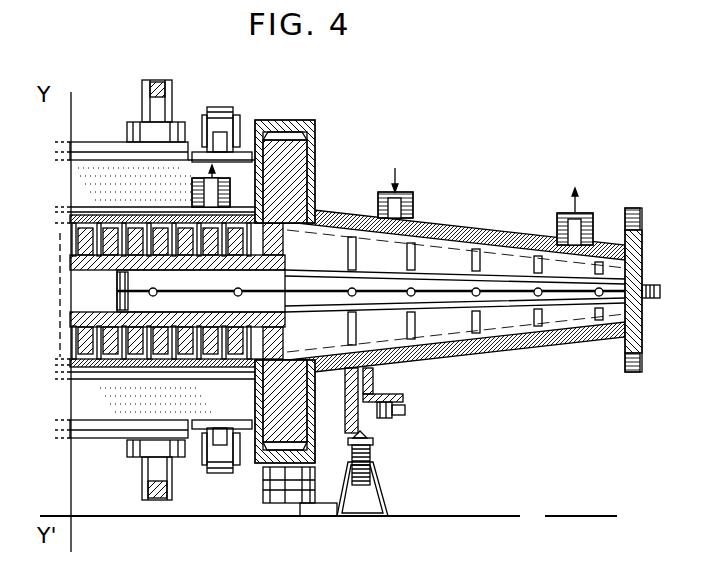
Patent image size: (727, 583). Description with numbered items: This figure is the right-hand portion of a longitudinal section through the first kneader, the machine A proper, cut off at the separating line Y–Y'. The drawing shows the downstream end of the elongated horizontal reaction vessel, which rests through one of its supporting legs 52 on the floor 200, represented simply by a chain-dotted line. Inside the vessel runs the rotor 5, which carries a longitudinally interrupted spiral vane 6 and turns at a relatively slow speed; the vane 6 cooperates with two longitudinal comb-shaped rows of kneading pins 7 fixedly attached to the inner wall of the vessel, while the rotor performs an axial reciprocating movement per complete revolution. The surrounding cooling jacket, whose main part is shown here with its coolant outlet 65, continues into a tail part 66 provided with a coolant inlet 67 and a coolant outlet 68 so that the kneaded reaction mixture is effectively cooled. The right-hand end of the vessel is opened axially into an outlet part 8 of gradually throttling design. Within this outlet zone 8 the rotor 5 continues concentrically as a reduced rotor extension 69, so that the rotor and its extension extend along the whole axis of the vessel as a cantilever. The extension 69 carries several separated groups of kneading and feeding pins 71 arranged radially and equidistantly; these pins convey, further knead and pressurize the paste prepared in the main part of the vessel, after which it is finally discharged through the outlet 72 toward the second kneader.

The machine proper A is at (100, 136).
The rotor 5 is at (80, 291).
The interrupted spiral vane 6 is at (217, 352).
The kneading pins 7 is at (112, 224).
The outlet part 8 is at (389, 348).
The supporting leg 52 is at (376, 489).
The coolant outlet 65 is at (195, 193).
The tail part of jacket 66 is at (492, 351).
The coolant inlet 67 is at (397, 194).
The coolant outlet 68 is at (578, 213).
The rotor extension 69 is at (493, 283).
The kneading and feeding pins 71 is at (362, 240).
The outlet 72 is at (643, 287).
The floor 200 is at (524, 515).